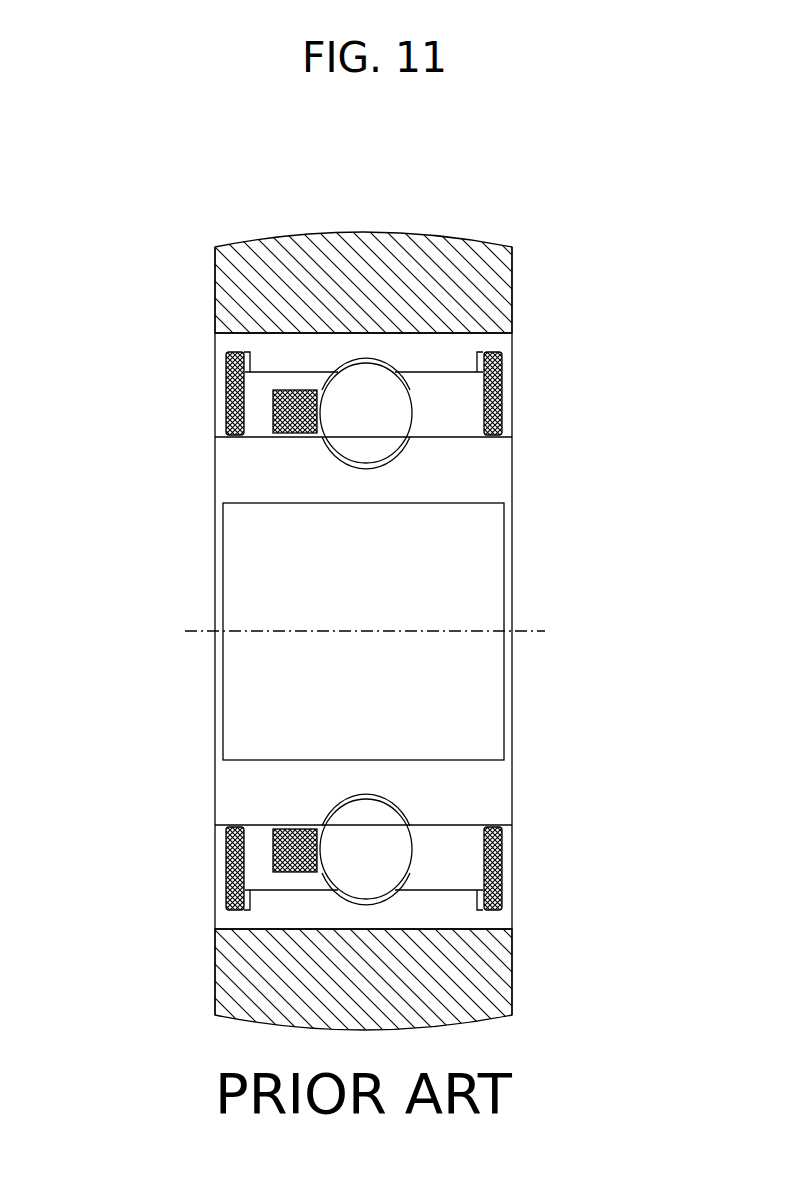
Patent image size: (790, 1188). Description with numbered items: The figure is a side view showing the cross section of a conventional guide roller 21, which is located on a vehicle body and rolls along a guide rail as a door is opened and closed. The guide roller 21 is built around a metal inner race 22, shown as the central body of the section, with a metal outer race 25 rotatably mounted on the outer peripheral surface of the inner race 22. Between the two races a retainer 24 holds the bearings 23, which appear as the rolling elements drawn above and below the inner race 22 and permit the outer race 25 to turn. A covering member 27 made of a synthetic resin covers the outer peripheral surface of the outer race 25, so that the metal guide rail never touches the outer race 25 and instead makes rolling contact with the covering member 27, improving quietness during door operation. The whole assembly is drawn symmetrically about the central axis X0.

The guide roller 21 is at (483, 233).
The inner race 22 is at (492, 482).
The bearings 23 is at (398, 418).
The retainer 24 is at (273, 428).
The outer race 25 is at (455, 350).
The covering member 27 is at (512, 293).
The bearing center axis X0 is at (522, 631).